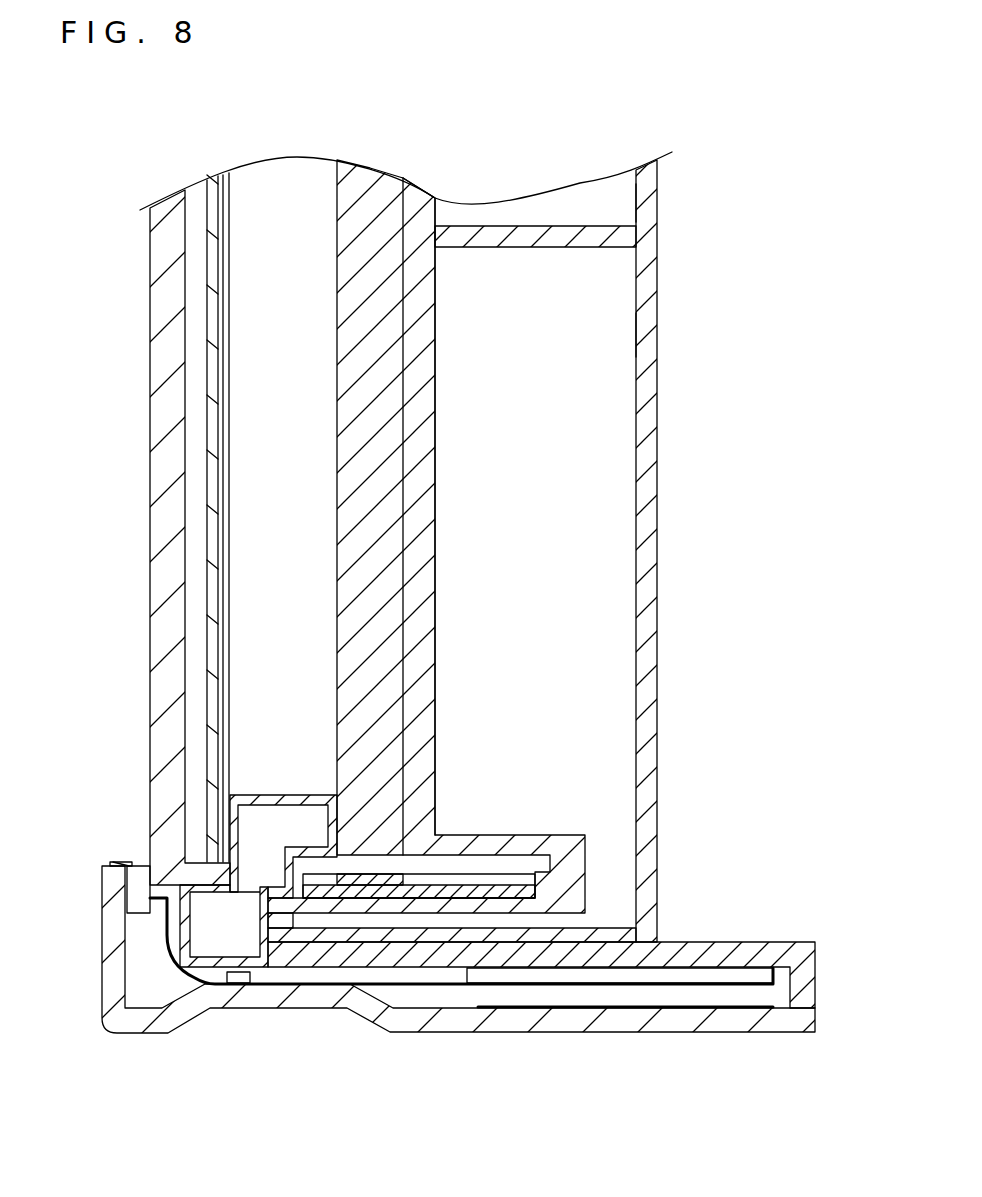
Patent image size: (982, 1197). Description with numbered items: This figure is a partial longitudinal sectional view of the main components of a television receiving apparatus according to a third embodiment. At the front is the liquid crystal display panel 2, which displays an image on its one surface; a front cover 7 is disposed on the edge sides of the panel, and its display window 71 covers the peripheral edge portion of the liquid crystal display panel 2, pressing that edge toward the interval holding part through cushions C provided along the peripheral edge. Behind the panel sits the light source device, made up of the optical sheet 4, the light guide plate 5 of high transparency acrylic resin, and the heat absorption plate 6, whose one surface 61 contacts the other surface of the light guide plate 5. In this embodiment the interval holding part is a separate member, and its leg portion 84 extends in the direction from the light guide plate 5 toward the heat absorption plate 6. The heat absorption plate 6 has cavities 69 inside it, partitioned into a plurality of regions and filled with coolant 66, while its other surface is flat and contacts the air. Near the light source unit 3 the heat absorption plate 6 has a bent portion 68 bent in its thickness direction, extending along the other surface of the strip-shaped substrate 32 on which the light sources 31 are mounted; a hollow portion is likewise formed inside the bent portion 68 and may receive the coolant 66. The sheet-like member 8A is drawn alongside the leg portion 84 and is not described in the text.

The liquid crystal display panel 2 is at (150, 626).
The optical sheet 4 is at (207, 463).
The light guide plate 5 is at (343, 360).
The heat absorption plate 6 is at (657, 512).
The one surface of the heat absorption plate 61 is at (402, 590).
The coolant 66 is at (532, 743).
The cavities 69 is at (636, 184).
The bent portion 68 is at (280, 923).
The front cover 7 is at (172, 1034).
The flexible substrate 8A is at (210, 988).
The leg portion 84 is at (770, 952).
The display window 71 is at (121, 862).
The cushions C is at (143, 866).
The light source unit 3 is at (421, 906).
The light sources 31 is at (368, 884).
The substrate 32 is at (392, 894).